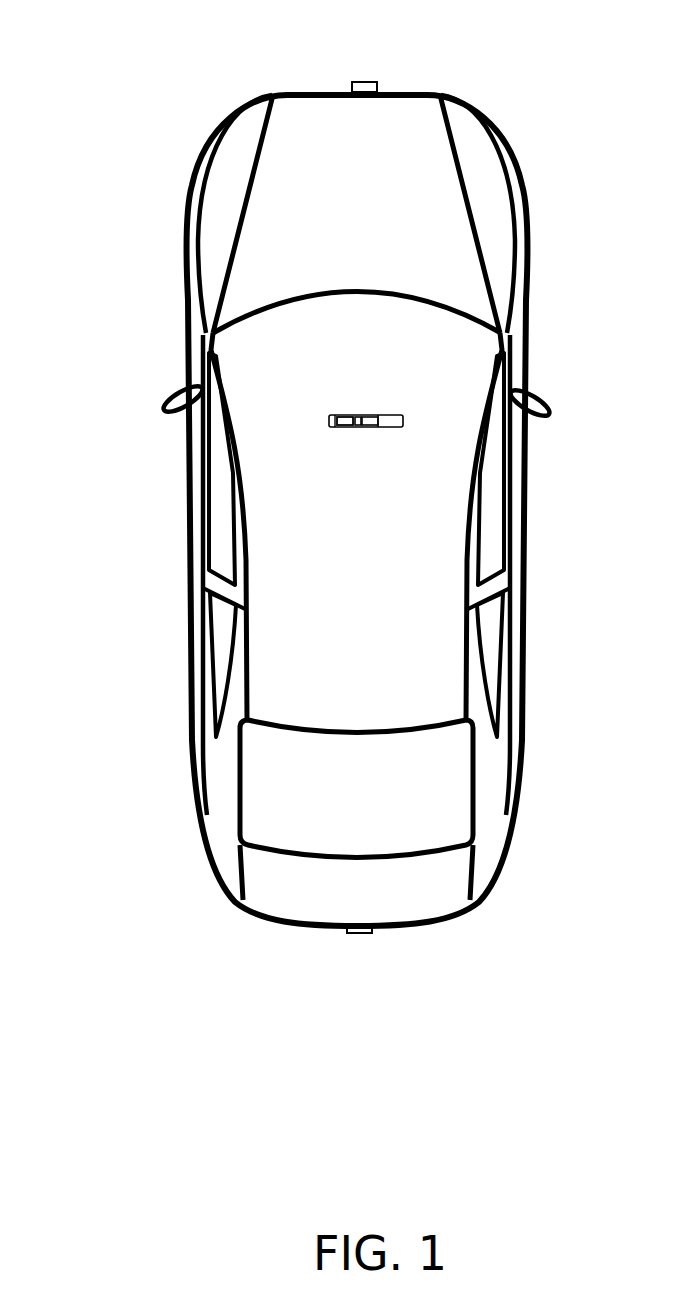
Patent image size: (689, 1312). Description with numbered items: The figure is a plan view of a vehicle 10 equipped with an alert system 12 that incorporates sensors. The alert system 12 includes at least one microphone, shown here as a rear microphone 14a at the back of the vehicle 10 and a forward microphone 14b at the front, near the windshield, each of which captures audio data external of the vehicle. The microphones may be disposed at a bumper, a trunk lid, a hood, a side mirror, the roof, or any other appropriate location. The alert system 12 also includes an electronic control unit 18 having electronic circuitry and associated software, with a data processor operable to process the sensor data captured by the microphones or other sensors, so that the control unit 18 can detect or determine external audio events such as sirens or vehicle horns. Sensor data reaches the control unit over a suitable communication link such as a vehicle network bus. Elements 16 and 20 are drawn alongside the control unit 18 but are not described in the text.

The vehicle 10 is at (122, 100).
The alert system 12 is at (322, 940).
The rear microphone 14a is at (365, 933).
The forward microphone 14b is at (368, 82).
The controller 16 is at (343, 415).
The electronic control unit 18 is at (361, 415).
The communication module 20 is at (403, 415).